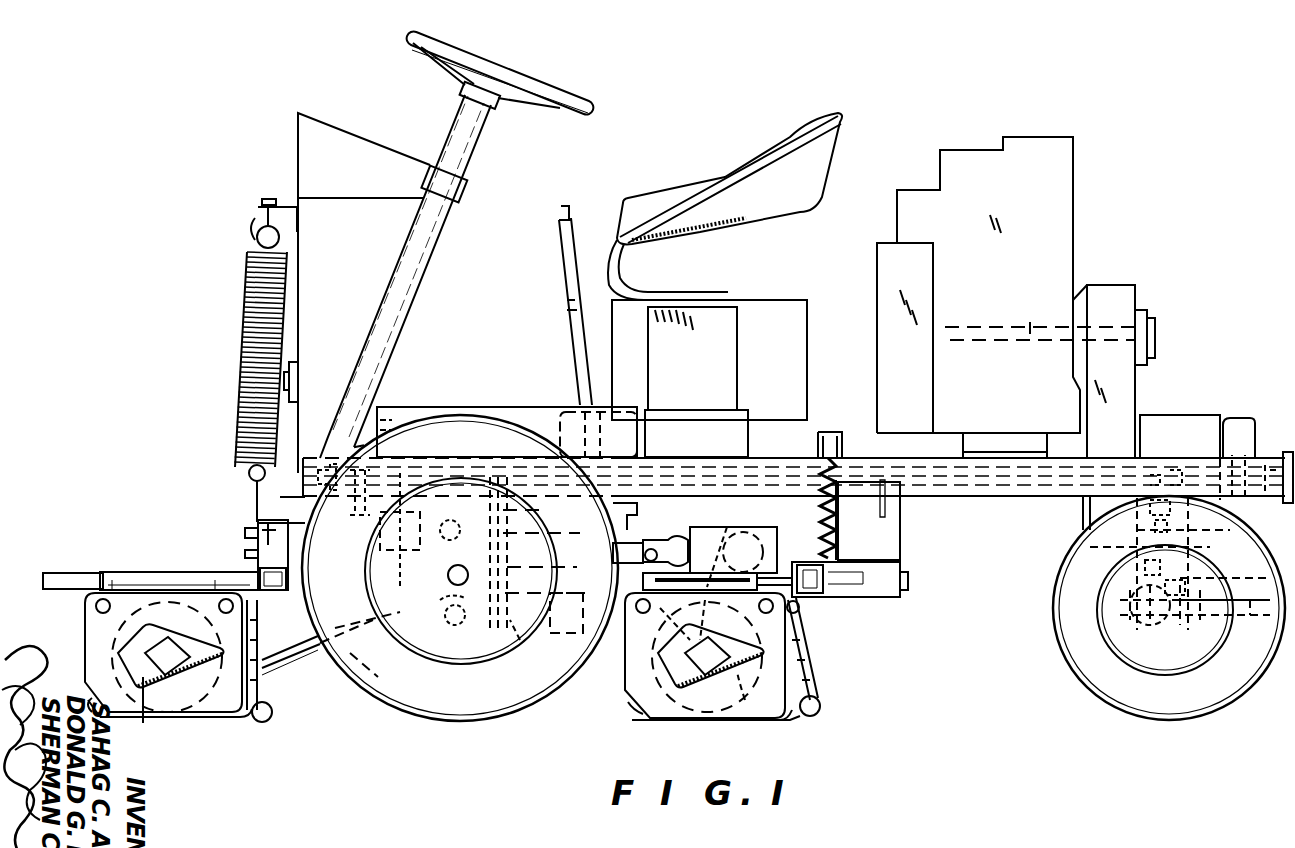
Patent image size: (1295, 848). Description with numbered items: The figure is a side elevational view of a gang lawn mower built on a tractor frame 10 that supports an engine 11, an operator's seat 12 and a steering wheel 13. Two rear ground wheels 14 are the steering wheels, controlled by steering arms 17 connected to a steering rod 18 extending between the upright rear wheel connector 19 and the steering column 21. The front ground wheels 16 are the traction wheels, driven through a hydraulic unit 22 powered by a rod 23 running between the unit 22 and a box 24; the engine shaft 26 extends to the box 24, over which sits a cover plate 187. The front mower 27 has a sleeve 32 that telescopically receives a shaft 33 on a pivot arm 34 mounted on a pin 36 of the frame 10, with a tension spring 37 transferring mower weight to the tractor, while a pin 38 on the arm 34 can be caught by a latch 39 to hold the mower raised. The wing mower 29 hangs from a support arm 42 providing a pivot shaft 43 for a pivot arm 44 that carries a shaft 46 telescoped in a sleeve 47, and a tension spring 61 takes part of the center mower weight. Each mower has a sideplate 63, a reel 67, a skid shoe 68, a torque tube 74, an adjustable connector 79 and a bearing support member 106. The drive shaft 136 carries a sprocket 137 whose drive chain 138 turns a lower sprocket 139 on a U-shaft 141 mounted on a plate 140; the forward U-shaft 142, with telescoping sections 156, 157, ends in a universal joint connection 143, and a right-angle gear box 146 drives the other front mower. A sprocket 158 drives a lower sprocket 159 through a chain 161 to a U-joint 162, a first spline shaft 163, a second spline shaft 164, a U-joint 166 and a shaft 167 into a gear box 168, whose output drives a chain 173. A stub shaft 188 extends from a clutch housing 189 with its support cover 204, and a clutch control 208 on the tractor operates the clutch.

The tractor frame 10 is at (975, 490).
The engine 11 is at (1073, 216).
The operator's seat 12 is at (755, 218).
The steering wheel 13 is at (518, 103).
The rear ground wheels 14 is at (1068, 642).
The front ground wheels 16 is at (568, 675).
The steering arms 17 is at (1180, 571).
The steering rod 18 is at (985, 463).
The upright rear wheel connector 19 is at (1185, 465).
The steering column 21 is at (388, 369).
The hydraulic unit 22 is at (550, 410).
The rod 23 is at (655, 478).
The box 24 is at (1100, 432).
The engine shaft 26 is at (1033, 320).
The front mower 27 is at (88, 632).
The wing mower 29 is at (665, 716).
The sleeve 32 is at (172, 572).
The shaft 33 is at (95, 572).
The pivot arm 34 is at (260, 560).
The pin 36 is at (273, 534).
The tension spring 37 is at (240, 420).
The pin 38 is at (252, 534).
The latch 39 is at (300, 383).
The support arm 42 is at (868, 530).
The pivot shaft 43 is at (902, 590).
The pivot arm 44 is at (836, 598).
The shaft 46 is at (810, 565).
The sleeve 47 is at (806, 613).
The tension spring 61 is at (820, 510).
The sideplate 63 is at (214, 715).
The reel 67 is at (742, 708).
The skid shoe 68 is at (635, 714).
The torque tube 74 is at (810, 710).
The adjustable connector 79 is at (805, 660).
The bearing support member 106 is at (143, 722).
The drive shaft 136 is at (1020, 490).
The sprocket 137 is at (475, 458).
The drive chain 138 is at (436, 572).
The lower sprocket 139 is at (509, 661).
The plate 140 is at (555, 551).
The U-shaft 141 is at (470, 657).
The U-shaft 142 is at (365, 648).
The universal joint connection 143 is at (285, 658).
The right-angle gear box 146 is at (557, 632).
The telescoping section 156 is at (305, 683).
The telescoping section 157 is at (273, 661).
The sprocket 158 is at (322, 478).
The lower sprocket 159 is at (395, 548).
The chain 161 is at (370, 545).
The U-joint 162 is at (440, 573).
The first spline shaft 163 is at (638, 533).
The second spline shaft 164 is at (717, 548).
The U-joint 166 is at (666, 547).
The shaft 167 is at (729, 557).
The gear box 168 is at (766, 538).
The chain 173 is at (666, 620).
The cover plate 187 is at (1150, 330).
The stub shaft 188 is at (1263, 449).
The clutch housing 189 is at (1220, 417).
The support cover 204 is at (1245, 420).
The clutch control 208 is at (567, 290).